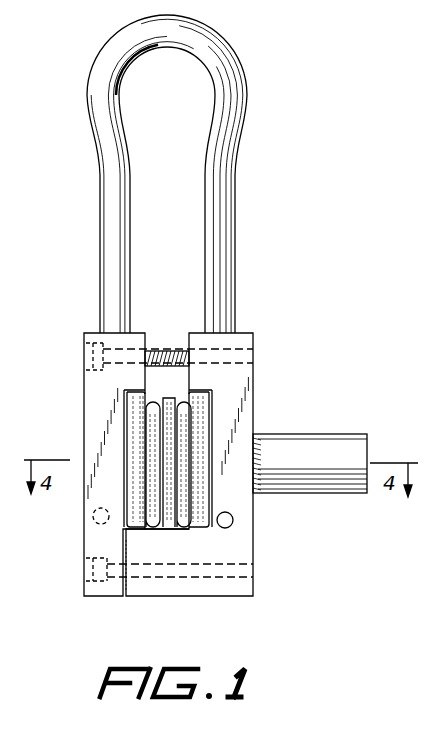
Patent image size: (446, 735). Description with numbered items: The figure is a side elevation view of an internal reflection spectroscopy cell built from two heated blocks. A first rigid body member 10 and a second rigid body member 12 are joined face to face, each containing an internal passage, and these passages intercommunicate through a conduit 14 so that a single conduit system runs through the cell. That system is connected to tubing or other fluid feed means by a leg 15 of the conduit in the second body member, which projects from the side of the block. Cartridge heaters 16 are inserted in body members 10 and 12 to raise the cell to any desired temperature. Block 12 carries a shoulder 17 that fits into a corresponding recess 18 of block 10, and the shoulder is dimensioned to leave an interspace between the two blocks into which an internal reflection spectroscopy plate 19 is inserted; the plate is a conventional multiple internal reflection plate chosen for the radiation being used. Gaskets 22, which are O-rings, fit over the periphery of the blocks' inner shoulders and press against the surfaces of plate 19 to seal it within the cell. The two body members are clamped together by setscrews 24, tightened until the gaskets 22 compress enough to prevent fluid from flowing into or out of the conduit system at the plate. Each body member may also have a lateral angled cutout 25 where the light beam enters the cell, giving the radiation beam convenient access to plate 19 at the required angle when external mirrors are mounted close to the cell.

The first rigid body member 10 is at (84, 545).
The second rigid body member 12 is at (253, 546).
The conduit 14 is at (234, 170).
The leg of conduit 15 is at (318, 434).
The cartridge heaters 16 is at (93, 517).
The shoulder 17 is at (143, 586).
The recess 18 is at (143, 530).
The internal reflection spectroscopy plate 19 is at (168, 410).
The gaskets 22 is at (149, 408).
The setscrews 24 is at (163, 349).
The lateral angled cutout 25 is at (130, 413).